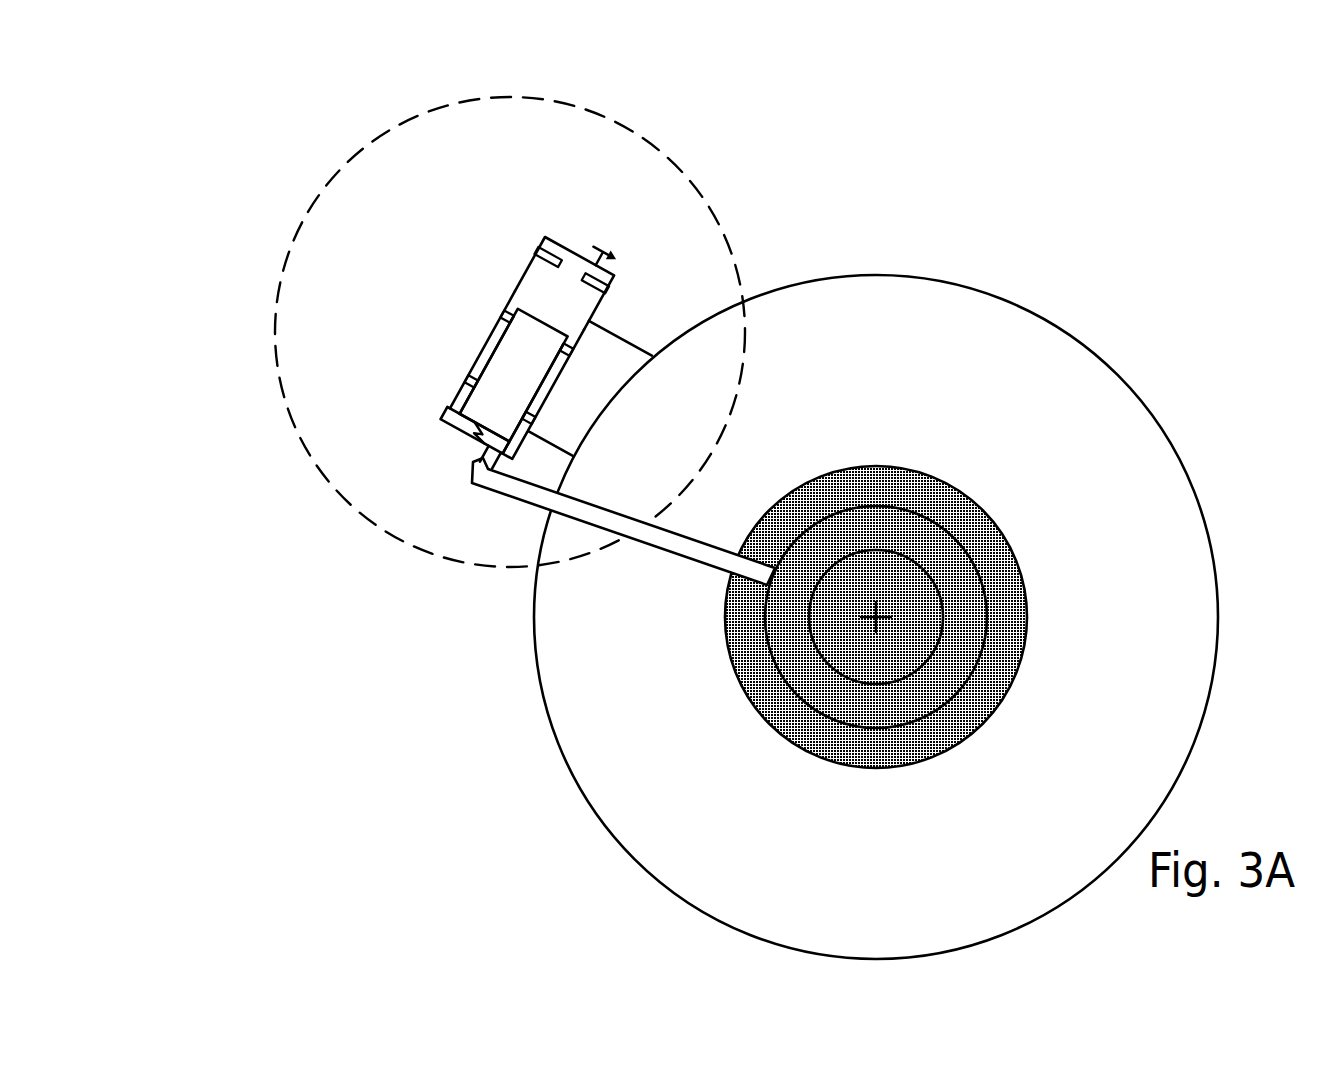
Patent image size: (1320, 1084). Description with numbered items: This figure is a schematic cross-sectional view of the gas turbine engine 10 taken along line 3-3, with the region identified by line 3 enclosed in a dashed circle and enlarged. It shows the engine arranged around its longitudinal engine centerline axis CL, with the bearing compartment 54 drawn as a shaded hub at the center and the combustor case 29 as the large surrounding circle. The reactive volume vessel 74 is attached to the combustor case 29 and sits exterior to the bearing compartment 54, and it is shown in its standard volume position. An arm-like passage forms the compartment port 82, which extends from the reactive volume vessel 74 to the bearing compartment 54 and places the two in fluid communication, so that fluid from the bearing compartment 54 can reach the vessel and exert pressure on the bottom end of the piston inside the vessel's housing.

The line 3- 3 is at (592, 108).
The gas turbine engine 10 is at (1182, 243).
The combustor case 29 is at (763, 290).
The fourth bearing compartment 54 is at (930, 518).
The longitudinal engine centerline axis CL is at (885, 615).
The reactive volume vessel 74 is at (509, 341).
The compartment port 82 is at (480, 466).